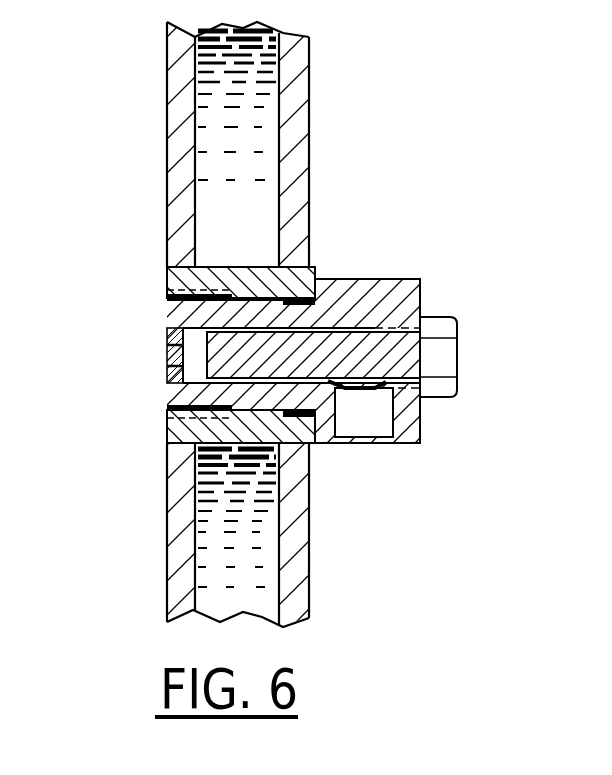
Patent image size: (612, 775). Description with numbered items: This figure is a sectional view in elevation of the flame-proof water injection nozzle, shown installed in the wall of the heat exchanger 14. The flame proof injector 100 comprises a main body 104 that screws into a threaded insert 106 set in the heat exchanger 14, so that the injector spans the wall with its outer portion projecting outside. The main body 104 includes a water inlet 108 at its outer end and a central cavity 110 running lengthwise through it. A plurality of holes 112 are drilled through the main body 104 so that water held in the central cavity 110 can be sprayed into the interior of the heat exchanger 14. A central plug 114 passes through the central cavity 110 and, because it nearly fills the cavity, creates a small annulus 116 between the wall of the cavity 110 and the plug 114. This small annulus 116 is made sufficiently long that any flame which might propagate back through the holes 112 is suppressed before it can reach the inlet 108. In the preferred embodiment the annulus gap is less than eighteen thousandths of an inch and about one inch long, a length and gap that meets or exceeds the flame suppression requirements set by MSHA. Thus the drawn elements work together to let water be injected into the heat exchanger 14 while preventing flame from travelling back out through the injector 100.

The heat exchanger 14 is at (310, 118).
The flame proof injector 100 is at (412, 279).
The main body 104 is at (422, 425).
The threaded insert 106 is at (320, 267).
The water inlet 108 is at (390, 432).
The central cavity 110 is at (166, 368).
The holes 112 is at (166, 353).
The central plug 114 is at (458, 348).
The annulus 116 is at (344, 385).